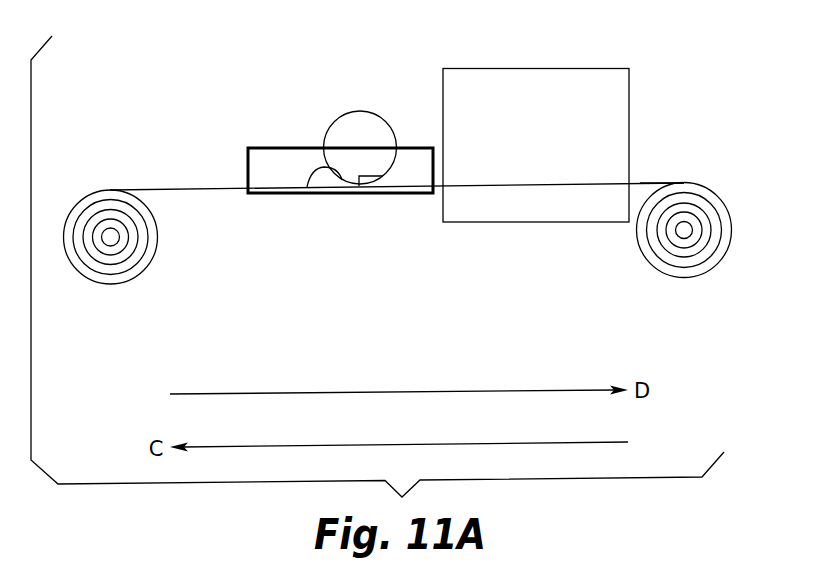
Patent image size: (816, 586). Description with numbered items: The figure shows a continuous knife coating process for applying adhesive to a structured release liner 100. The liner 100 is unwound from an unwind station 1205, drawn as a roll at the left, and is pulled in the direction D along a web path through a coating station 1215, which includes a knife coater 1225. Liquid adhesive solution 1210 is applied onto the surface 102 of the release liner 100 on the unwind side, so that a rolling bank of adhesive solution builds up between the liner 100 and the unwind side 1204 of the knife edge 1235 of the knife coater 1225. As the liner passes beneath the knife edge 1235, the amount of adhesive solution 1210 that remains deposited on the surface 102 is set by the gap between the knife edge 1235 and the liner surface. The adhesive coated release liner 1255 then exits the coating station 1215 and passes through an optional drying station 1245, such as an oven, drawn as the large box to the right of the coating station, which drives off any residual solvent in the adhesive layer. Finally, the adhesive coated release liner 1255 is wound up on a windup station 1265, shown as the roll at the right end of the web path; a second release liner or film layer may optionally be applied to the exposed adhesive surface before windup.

The structured release liner 100 is at (170, 187).
The surface 102 is at (339, 184).
The unwind side of the knife edge 1204 is at (339, 184).
The unwind station 1205 is at (143, 273).
The liquid adhesive solution 1210 is at (318, 178).
The coating station 1215 is at (263, 178).
The knife coater 1225 is at (333, 135).
The knife edge 1235 is at (357, 187).
The drying station 1245 is at (532, 78).
The adhesive coated release liner 1255 is at (645, 182).
The windup station 1265 is at (647, 260).